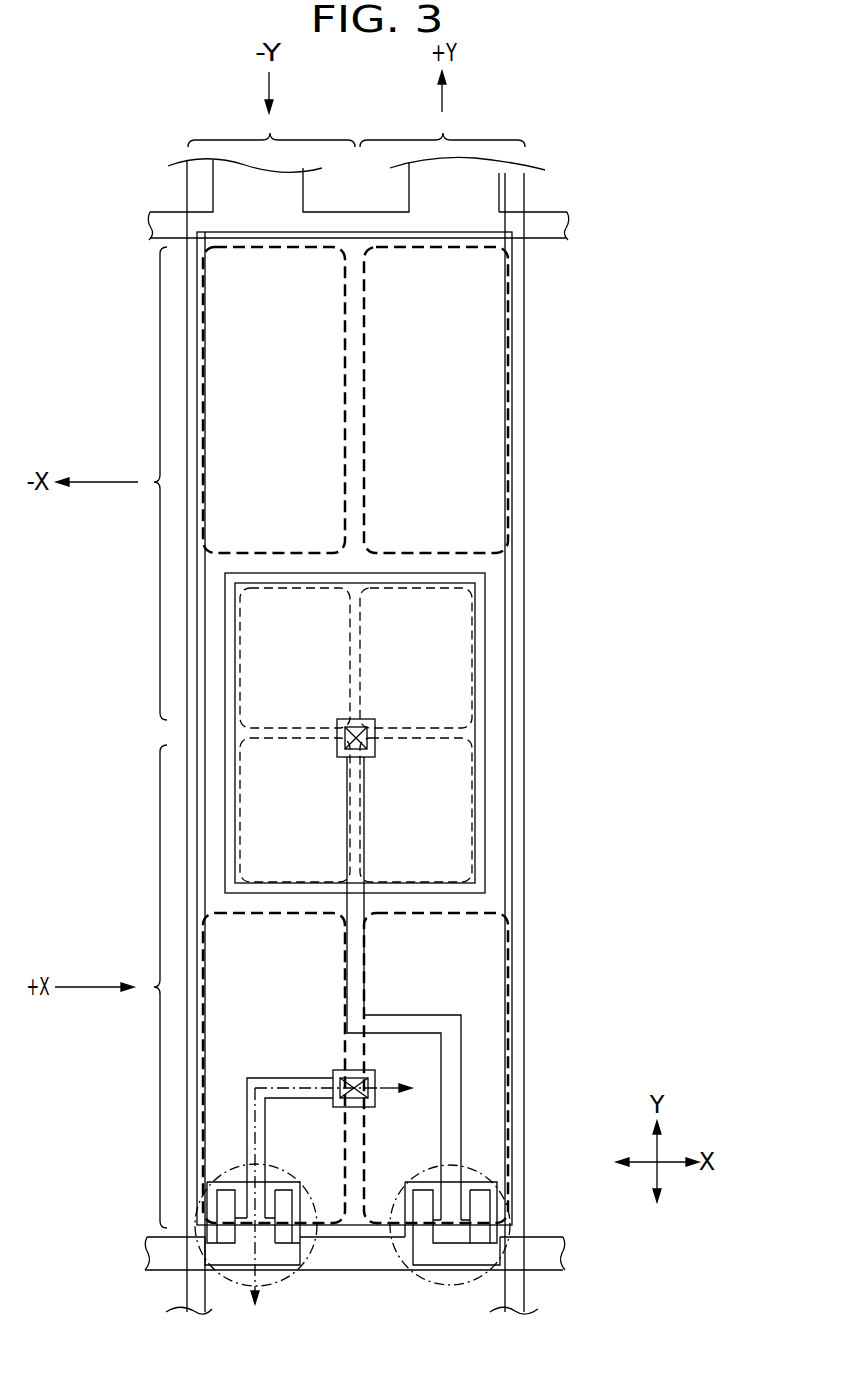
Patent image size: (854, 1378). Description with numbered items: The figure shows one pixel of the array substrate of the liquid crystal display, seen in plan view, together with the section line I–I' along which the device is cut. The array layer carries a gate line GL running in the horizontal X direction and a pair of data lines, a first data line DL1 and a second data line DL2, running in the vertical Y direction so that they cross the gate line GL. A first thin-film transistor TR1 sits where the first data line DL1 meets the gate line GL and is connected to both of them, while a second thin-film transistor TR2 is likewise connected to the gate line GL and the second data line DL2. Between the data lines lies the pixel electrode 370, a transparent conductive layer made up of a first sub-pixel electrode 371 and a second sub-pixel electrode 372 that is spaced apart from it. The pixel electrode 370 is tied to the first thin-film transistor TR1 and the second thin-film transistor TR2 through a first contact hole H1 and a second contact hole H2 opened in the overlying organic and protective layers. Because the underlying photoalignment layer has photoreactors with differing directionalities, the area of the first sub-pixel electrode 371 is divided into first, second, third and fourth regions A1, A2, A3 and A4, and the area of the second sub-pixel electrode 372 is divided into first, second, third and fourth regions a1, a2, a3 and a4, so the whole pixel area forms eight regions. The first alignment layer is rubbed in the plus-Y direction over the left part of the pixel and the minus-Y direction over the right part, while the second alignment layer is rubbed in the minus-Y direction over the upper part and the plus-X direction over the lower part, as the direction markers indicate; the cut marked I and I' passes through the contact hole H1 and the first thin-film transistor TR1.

The first region A1 is at (286, 982).
The second region A2 is at (450, 982).
The third region A3 is at (288, 407).
The fourth region A4 is at (453, 407).
The first region a1 is at (283, 824).
The second region a2 is at (407, 824).
The third region a3 is at (283, 674).
The fourth region a4 is at (407, 674).
The first contact hole H1 is at (352, 1082).
The second contact hole H2 is at (352, 733).
The pixel electrode 370 is at (451, 766).
The first sub-pixel electrode 371 is at (414, 735).
The second sub-pixel electrode 372 is at (432, 735).
The first data line DL1 is at (185, 1297).
The second data line DL2 is at (526, 1300).
The gate line GL is at (566, 1250).
The first thin-film transistor TR1 is at (285, 1277).
The second thin-film transistor TR2 is at (413, 1277).
The section line I is at (314, 1213).
The section line I' is at (404, 1088).